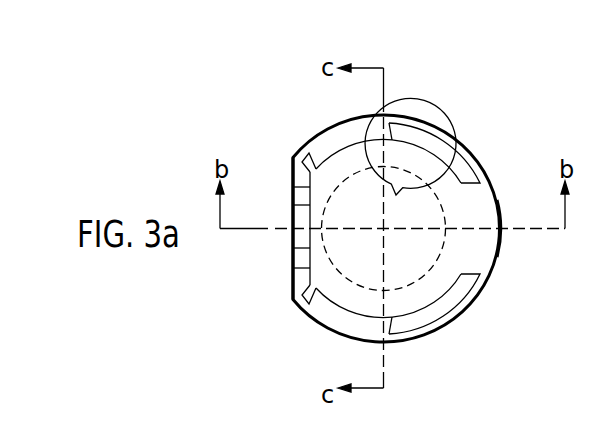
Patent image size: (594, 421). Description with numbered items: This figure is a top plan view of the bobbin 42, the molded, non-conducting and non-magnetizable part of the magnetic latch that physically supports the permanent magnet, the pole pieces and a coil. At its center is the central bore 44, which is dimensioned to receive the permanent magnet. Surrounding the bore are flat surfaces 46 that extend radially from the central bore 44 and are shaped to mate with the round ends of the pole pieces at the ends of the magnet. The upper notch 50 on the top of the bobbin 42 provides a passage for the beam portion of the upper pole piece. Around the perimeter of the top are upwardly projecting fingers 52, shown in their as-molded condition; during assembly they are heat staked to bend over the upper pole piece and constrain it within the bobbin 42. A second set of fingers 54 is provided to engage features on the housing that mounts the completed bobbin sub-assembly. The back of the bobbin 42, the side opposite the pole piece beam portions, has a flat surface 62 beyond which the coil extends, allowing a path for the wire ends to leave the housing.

The bobbin 42 is at (497, 91).
The central bore 44 is at (409, 195).
The flat surfaces 46 is at (340, 157).
The upper notch 50 is at (494, 208).
The fingers 52 is at (293, 207).
The second set of fingers 54 is at (300, 161).
The flat surface 62 is at (290, 247).